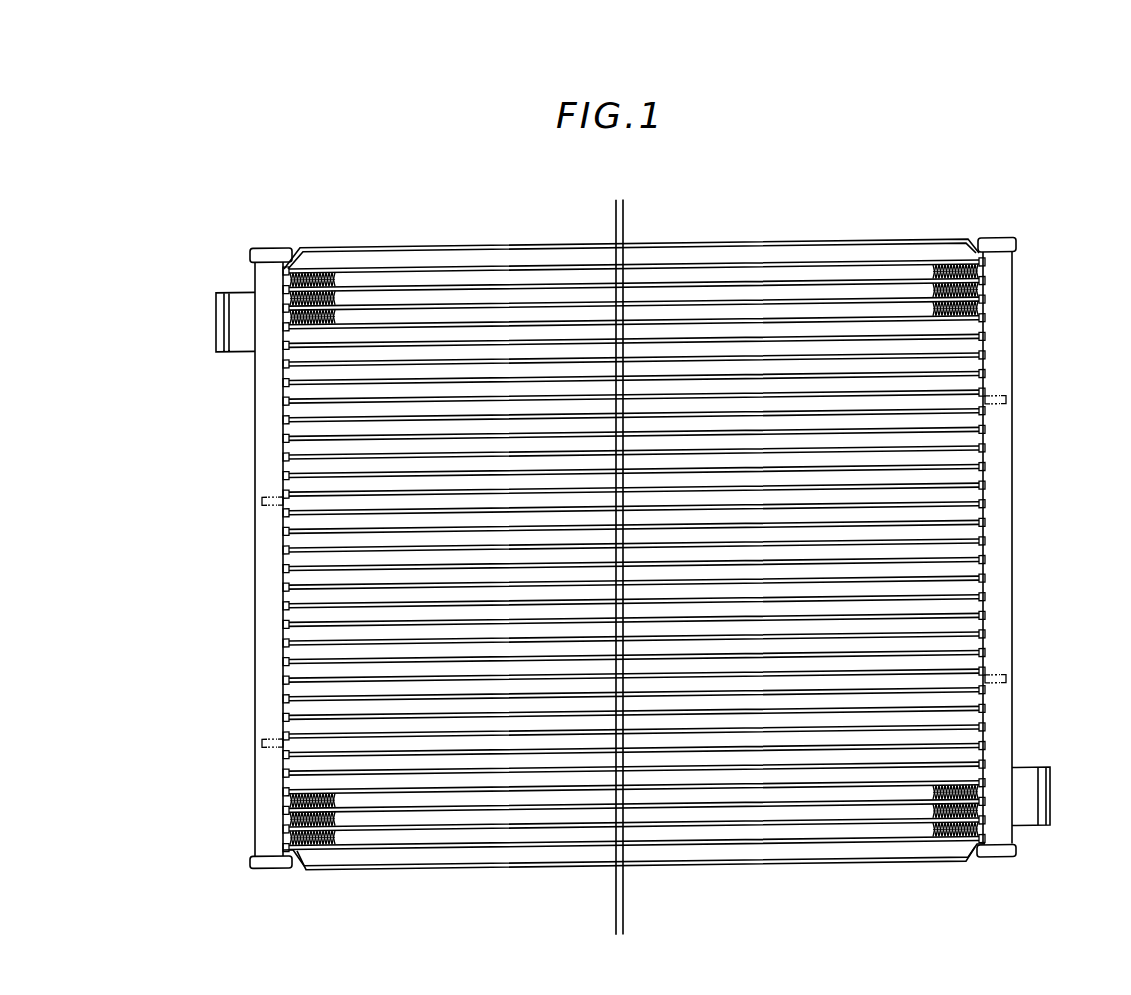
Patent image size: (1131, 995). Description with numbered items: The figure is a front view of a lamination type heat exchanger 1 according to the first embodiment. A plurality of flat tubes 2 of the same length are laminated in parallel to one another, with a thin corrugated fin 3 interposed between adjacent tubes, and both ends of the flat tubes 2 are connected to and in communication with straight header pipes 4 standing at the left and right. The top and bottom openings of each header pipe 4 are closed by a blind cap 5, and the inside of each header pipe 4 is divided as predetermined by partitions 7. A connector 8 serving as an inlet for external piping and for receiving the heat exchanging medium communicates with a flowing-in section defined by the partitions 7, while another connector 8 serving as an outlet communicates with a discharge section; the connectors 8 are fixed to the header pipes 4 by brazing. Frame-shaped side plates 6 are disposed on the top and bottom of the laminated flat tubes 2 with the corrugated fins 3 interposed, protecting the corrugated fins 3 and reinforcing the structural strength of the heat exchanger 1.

The lamination type heat exchanger 1 is at (418, 245).
The flat tubes 2 is at (532, 327).
The corrugated fin 3 is at (340, 299).
The header pipes 4 is at (255, 431).
The blind cap 5 is at (266, 248).
The side plates 6 is at (710, 253).
The partitions 7 is at (262, 500).
The connector 8 is at (242, 297).